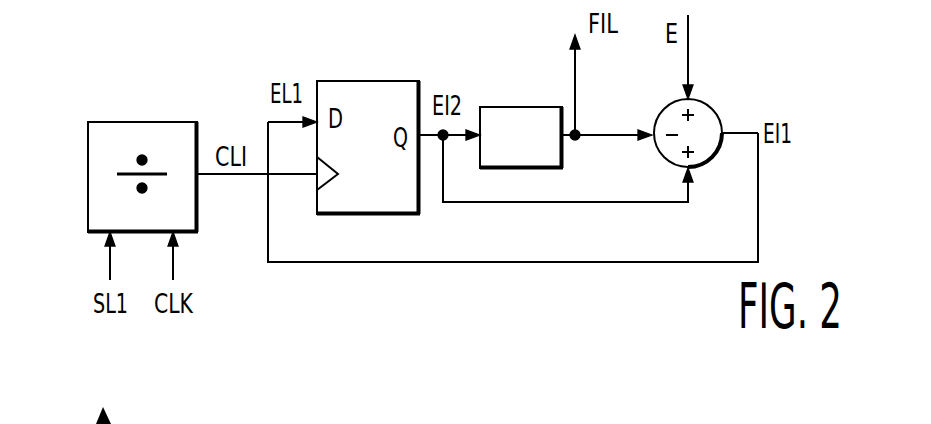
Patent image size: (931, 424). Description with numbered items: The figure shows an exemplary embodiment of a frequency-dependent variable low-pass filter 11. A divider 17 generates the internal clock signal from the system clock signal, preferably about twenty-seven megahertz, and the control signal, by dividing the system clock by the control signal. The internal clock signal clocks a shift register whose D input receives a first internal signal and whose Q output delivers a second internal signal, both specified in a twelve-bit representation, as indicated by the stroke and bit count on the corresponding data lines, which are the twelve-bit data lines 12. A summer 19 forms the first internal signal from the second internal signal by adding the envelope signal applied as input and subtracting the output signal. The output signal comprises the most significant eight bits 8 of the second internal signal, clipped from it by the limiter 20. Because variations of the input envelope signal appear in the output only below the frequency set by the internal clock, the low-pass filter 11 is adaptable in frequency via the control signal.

The low-pass filter 11 is at (183, 75).
The divider 17 is at (88, 173).
The limiter 20 is at (508, 107).
The summer 19 is at (720, 115).
The filter 12 is at (525, 188).
The 8-bit bus 8 is at (593, 147).